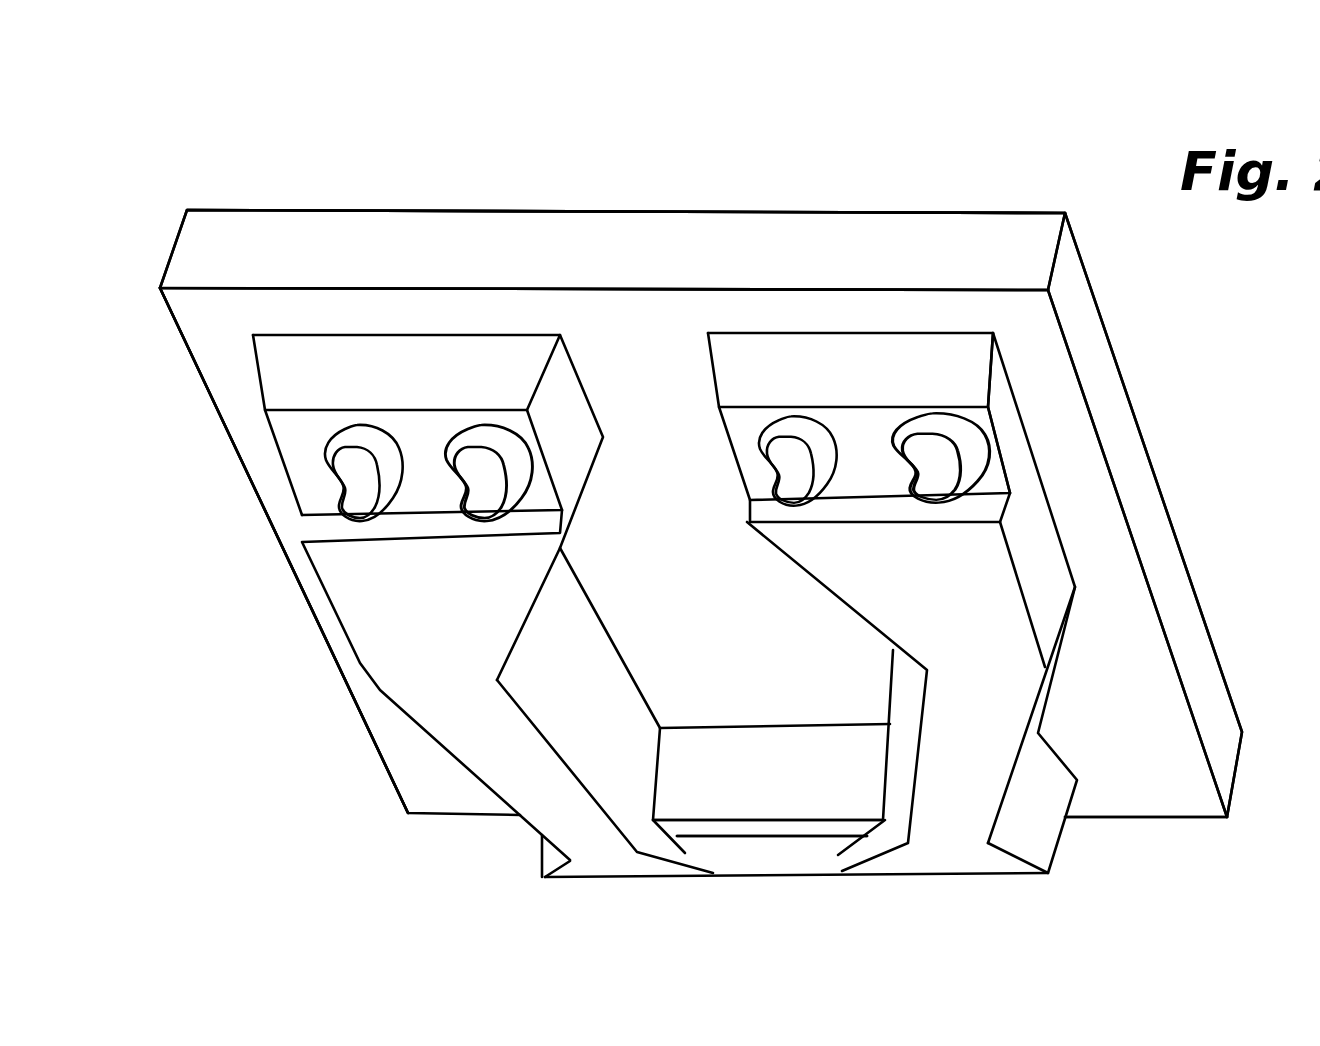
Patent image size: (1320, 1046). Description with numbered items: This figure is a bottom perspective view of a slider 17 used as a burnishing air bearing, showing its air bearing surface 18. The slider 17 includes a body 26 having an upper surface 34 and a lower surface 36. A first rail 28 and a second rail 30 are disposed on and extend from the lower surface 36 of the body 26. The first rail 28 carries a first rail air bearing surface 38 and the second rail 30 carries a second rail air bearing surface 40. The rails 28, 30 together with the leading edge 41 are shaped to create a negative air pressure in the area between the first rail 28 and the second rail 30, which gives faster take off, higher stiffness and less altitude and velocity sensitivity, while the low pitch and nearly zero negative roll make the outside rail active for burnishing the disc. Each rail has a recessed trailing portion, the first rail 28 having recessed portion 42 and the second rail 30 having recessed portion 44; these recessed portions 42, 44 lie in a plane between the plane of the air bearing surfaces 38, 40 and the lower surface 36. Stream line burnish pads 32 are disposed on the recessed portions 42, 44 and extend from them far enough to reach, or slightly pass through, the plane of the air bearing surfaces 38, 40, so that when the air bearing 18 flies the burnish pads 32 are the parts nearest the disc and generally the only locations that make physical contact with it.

The slider 17 is at (832, 137).
The body 26 is at (822, 211).
The upper surface 34 is at (605, 210).
The air bearing surface 18 is at (652, 325).
The first rail 28 is at (360, 662).
The recessed trailing portion 42 is at (305, 480).
The first rail air bearing surface 38 is at (462, 624).
The lower surface 36 is at (715, 613).
The second rail air bearing surface 40 is at (950, 603).
The recessed trailing portion 44 is at (992, 478).
The second rail 30 is at (1018, 577).
The leading edge 41 is at (733, 862).
The stream line burnish pads 32 is at (357, 447).